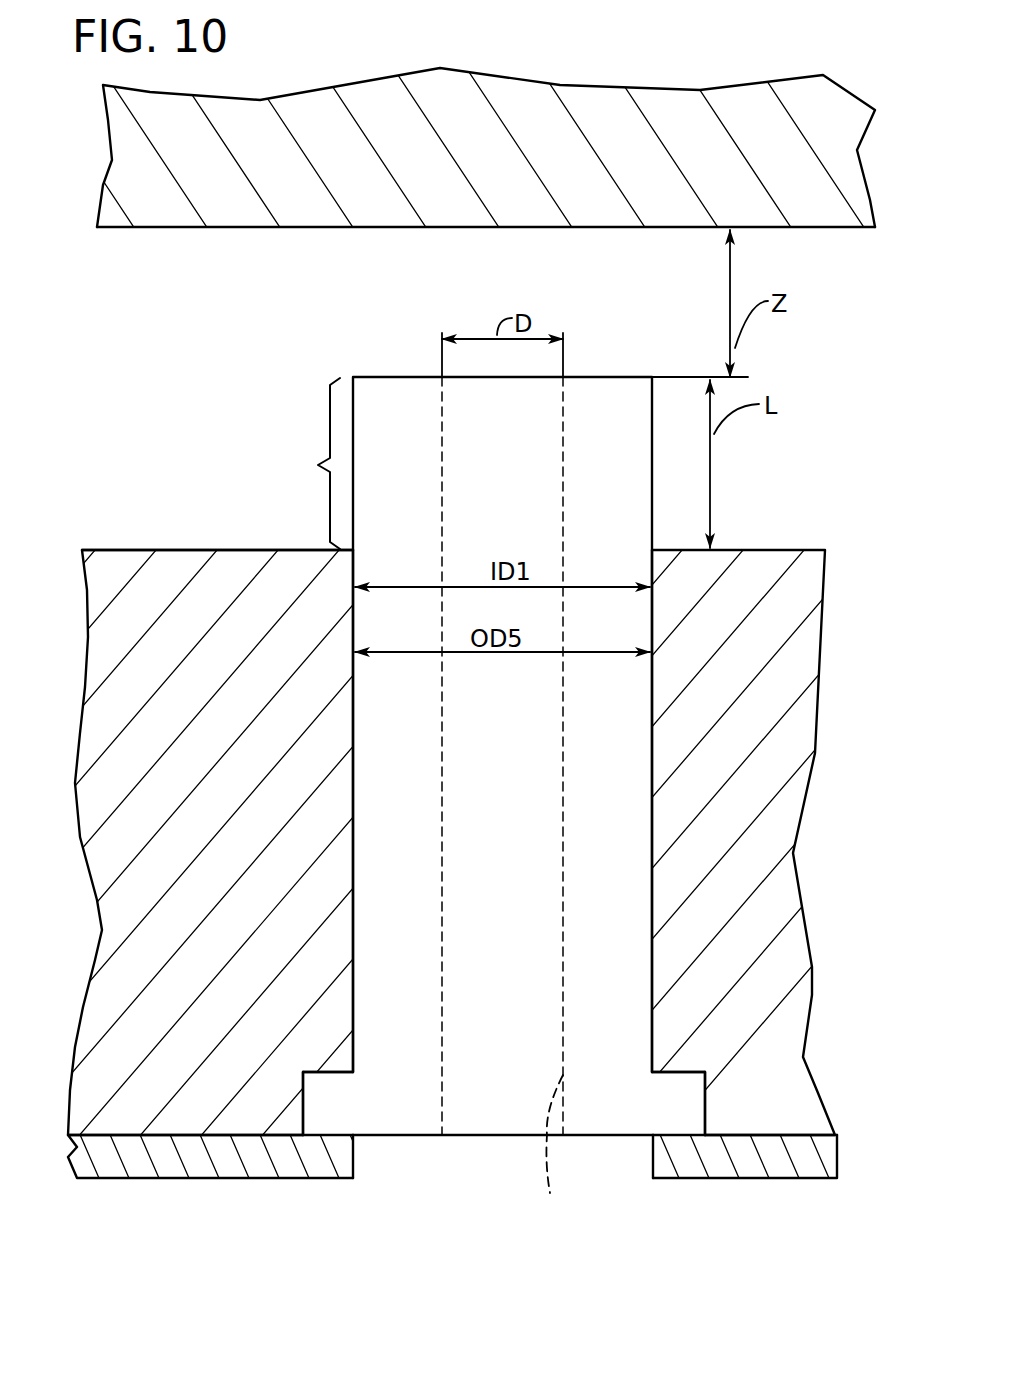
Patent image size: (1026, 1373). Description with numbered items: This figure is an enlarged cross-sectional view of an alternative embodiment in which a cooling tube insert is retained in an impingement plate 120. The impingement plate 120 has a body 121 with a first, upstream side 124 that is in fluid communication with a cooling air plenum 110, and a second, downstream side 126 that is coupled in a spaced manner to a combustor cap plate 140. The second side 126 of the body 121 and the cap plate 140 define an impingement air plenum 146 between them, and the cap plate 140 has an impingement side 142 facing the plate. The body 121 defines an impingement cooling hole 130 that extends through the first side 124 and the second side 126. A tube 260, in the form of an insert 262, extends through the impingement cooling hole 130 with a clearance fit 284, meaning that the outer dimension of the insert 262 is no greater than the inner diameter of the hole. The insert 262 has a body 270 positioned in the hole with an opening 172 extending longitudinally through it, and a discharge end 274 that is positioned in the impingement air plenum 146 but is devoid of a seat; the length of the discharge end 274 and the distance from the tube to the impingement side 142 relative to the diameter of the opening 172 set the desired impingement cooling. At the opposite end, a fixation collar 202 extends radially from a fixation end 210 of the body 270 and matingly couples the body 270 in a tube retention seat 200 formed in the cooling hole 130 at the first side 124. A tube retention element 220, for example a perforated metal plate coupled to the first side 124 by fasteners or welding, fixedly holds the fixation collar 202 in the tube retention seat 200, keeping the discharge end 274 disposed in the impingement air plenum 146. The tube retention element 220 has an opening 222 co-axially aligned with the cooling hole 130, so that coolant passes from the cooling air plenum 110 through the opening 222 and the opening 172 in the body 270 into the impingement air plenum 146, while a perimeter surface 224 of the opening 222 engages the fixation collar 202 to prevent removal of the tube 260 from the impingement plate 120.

The cooling air plenum 110 is at (534, 1260).
The impingement plate 120 is at (513, 840).
The body 121 is at (791, 600).
The first side 124 is at (800, 1133).
The second side 126 is at (115, 550).
The impingement cooling hole 130 is at (654, 994).
The combustor cap plate 140 is at (845, 184).
The impingement side 142 is at (802, 229).
The impingement air plenum 146 is at (217, 383).
The opening 172 is at (561, 1149).
The tube retention seat 200 is at (336, 1070).
The fixation collar 202 is at (343, 1095).
The fixation end 210 is at (497, 1143).
The tube retention element 220 is at (142, 1162).
The opening 222 is at (358, 1157).
The perimeter surface 224 is at (338, 1135).
The tube 260 is at (613, 756).
The insert 262 is at (722, 457).
The body 270 is at (395, 797).
The discharge end 274 is at (303, 463).
The clearance fit 284 is at (652, 622).